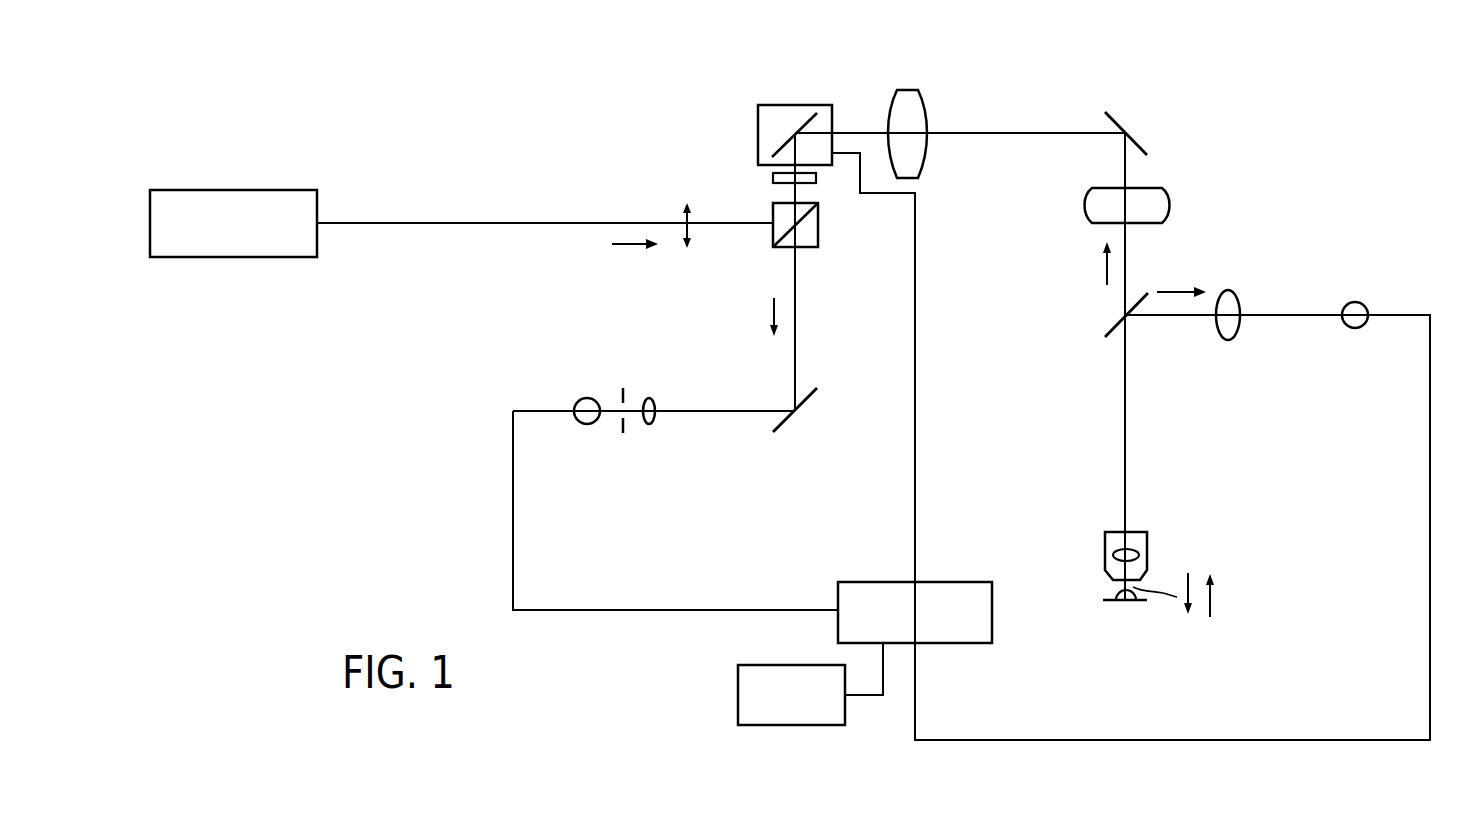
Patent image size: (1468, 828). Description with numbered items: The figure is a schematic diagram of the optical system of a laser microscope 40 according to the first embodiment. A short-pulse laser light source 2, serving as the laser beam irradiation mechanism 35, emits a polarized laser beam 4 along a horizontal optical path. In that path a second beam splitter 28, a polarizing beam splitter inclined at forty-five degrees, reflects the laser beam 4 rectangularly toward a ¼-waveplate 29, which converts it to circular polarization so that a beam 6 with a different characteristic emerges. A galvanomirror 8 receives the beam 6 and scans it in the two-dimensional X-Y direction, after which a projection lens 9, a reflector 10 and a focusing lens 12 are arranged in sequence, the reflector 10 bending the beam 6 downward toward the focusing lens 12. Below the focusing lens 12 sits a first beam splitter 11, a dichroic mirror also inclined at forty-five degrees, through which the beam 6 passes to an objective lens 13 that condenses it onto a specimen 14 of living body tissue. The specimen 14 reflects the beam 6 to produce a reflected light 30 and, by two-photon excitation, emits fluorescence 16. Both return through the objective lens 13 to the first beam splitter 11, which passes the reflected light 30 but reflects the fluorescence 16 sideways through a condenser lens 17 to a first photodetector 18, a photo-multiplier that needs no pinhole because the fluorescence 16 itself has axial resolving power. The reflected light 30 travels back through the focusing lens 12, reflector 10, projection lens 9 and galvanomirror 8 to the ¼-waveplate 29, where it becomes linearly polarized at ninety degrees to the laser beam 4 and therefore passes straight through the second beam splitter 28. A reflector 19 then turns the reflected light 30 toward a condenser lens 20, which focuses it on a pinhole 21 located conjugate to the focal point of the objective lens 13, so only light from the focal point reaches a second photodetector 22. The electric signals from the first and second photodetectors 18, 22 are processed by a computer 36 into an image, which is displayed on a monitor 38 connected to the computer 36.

The laser light source 2 is at (238, 190).
The laser beam irradiation mechanism 35 is at (363, 201).
The laser beam 4 is at (545, 241).
The galvanomirror 8 is at (804, 110).
The ¼-waveplate 29 is at (773, 178).
The second beam splitter 28 is at (819, 228).
The projection lens 9 is at (905, 88).
The reflector 10 is at (1118, 110).
The focusing lens 12 is at (1082, 200).
The reflected light 30 is at (981, 464).
The first beam splitter 11 is at (1115, 325).
The fluorescence 16 is at (1189, 458).
The beam 6 is at (1185, 556).
The condenser lens 17 is at (1228, 341).
The first photodetector 18 is at (1355, 329).
The objective lens 13 is at (1105, 545).
The specimen 14 is at (1115, 598).
The reflector 19 is at (782, 432).
The second photodetector 22 is at (583, 425).
The pinhole 21 is at (623, 434).
The condenser lens 20 is at (648, 425).
The computer 36 is at (953, 581).
The monitor 38 is at (738, 695).
The laser microscope 40 is at (1306, 146).